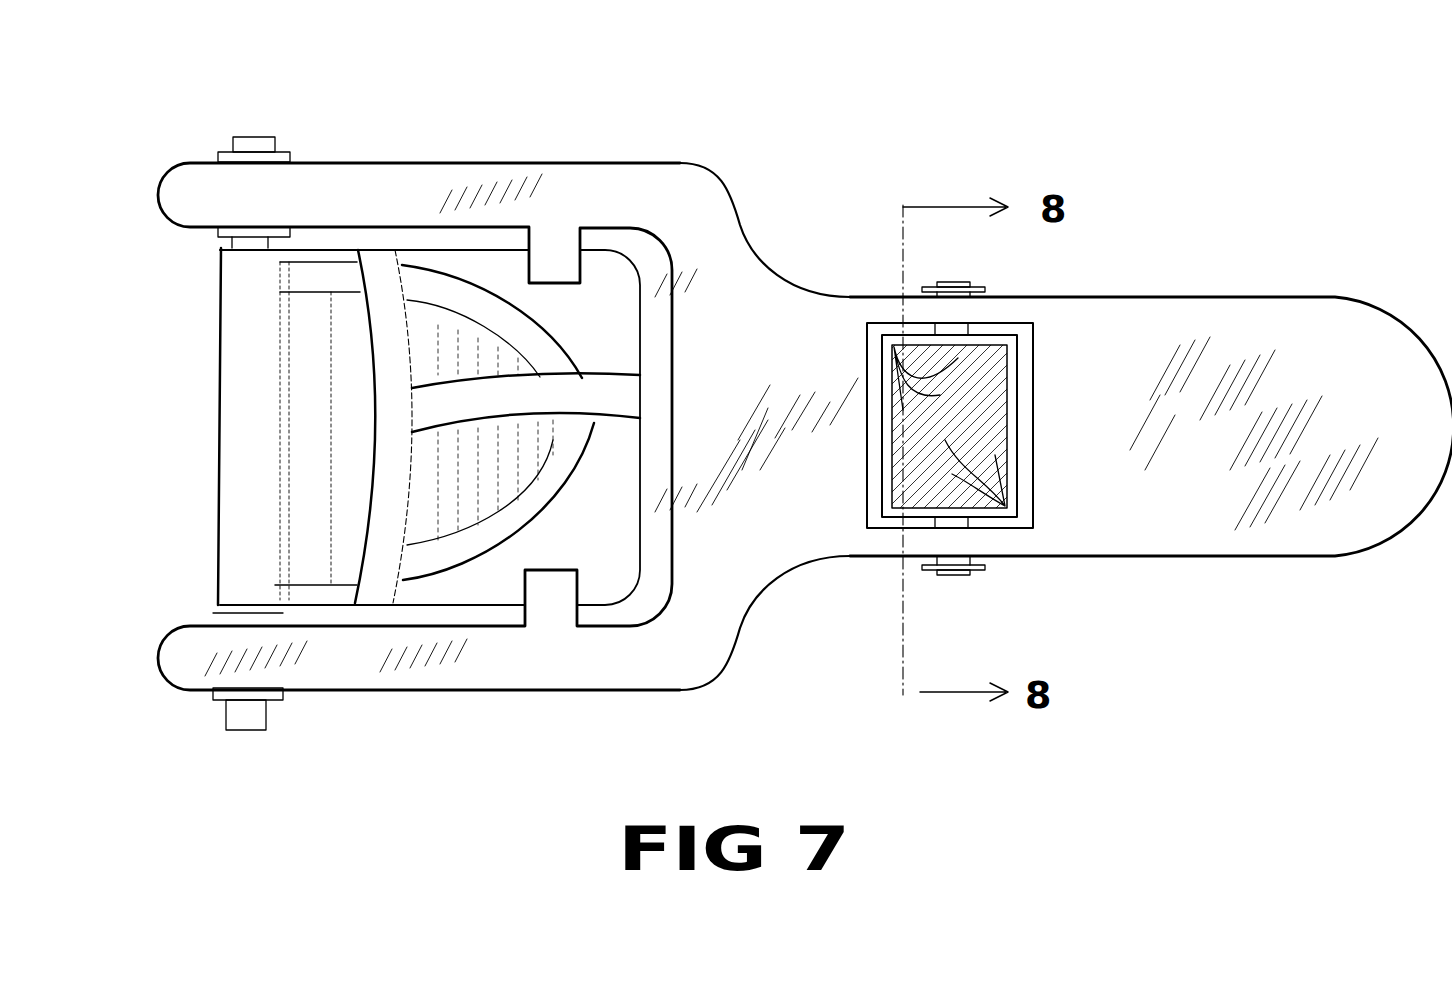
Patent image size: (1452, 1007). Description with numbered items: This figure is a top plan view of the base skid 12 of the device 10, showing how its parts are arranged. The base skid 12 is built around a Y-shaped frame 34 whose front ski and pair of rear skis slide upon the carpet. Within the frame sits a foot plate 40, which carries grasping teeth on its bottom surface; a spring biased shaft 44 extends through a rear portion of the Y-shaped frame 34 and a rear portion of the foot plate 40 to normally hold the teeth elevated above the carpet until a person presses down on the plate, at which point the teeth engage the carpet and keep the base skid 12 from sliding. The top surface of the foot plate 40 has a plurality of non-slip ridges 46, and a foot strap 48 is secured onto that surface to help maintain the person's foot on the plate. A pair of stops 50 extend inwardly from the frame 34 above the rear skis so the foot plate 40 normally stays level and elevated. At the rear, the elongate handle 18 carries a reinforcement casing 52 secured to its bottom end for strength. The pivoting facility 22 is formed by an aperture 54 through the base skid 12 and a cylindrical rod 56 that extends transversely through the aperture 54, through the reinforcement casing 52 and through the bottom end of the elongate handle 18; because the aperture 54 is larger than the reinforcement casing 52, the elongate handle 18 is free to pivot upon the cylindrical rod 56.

The tool assembly 10 is at (752, 147).
The base skid 12 is at (488, 162).
The elongate handle 18 is at (1005, 365).
The pivoting facility 22 is at (950, 578).
The Y-shaped frame 34 is at (1203, 312).
The foot plate 40 is at (242, 383).
The spring biased shaft 44 is at (250, 140).
The non-slip ridges 46 is at (305, 458).
The foot strap 48 is at (380, 280).
The stops 50 is at (556, 245).
The reinforcement casing 52 is at (1012, 418).
The aperture 54 is at (873, 355).
The cylindrical rod 56 is at (960, 282).